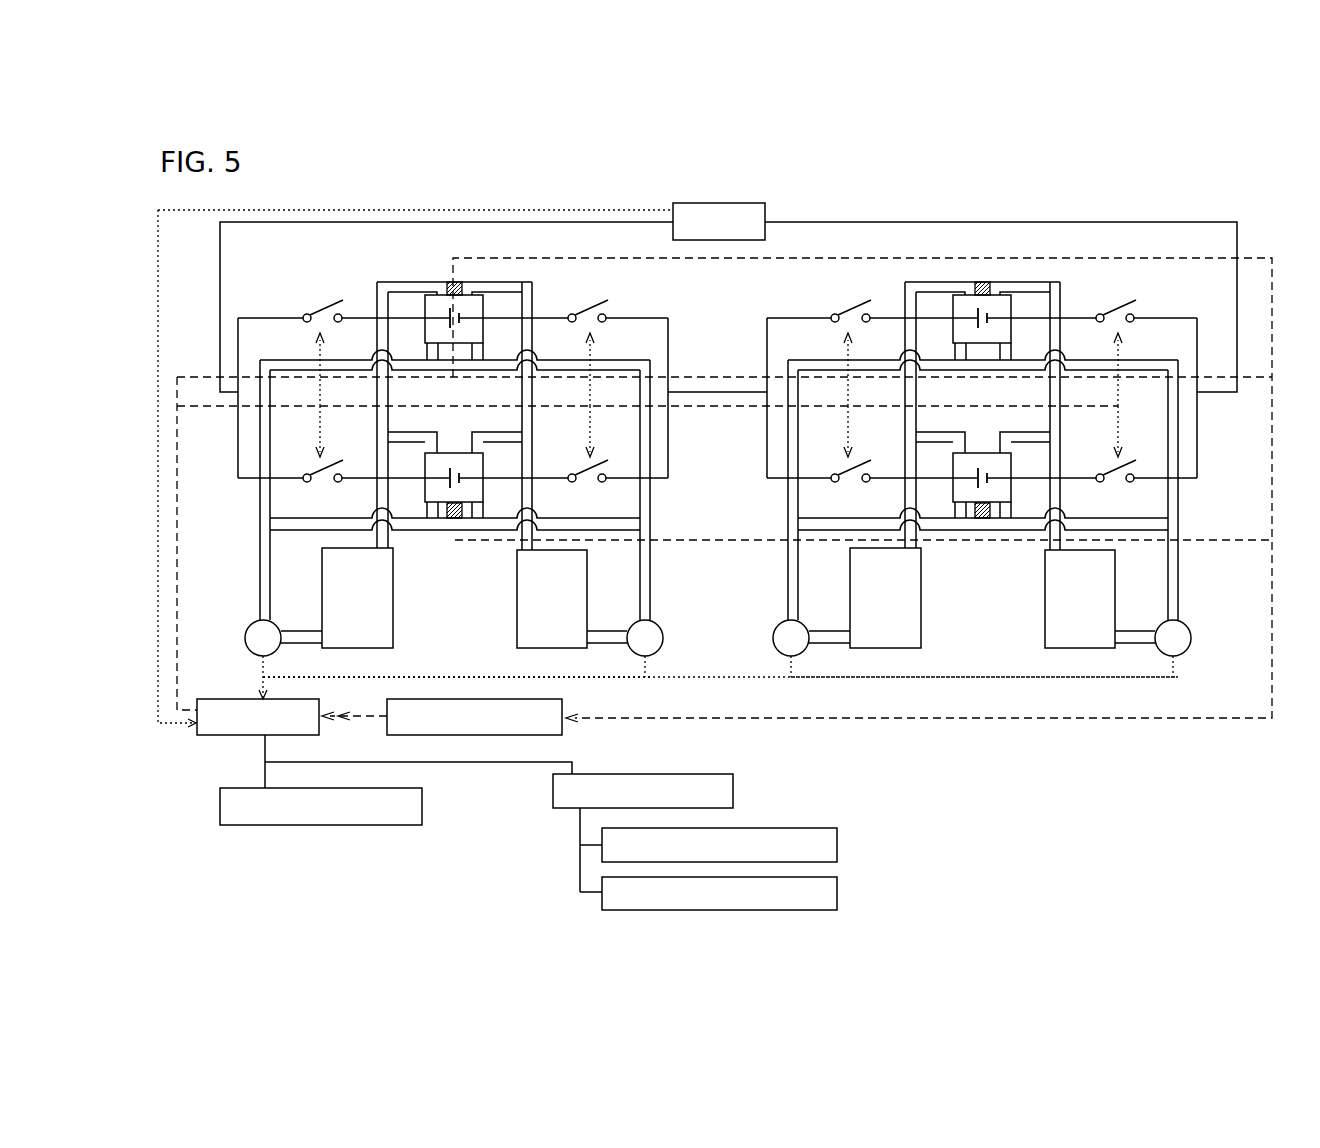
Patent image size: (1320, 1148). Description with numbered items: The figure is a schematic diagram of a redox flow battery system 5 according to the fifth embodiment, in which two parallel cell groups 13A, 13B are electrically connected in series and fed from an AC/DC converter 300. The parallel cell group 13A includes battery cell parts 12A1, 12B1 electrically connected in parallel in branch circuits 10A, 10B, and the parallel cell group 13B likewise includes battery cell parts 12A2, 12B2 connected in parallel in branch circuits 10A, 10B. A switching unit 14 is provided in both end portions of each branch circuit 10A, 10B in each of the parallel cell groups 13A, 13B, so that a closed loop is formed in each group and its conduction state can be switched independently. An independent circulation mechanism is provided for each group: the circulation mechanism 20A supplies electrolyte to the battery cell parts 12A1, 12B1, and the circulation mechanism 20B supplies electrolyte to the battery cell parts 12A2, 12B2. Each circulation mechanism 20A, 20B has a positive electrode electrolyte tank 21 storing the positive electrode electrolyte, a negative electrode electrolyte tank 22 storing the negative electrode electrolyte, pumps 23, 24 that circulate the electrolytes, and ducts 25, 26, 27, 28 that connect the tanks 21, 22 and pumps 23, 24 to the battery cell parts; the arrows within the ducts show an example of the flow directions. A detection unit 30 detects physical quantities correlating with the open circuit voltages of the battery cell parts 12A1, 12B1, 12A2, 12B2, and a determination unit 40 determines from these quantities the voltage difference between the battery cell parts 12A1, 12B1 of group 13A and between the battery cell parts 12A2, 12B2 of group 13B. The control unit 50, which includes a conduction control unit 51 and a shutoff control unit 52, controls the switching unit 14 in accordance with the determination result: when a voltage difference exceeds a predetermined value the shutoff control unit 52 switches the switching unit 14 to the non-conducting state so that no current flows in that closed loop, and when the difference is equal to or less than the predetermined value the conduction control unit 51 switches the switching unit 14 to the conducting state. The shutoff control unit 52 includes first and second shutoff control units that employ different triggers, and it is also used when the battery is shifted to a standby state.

The redox flow battery system 5 is at (1207, 734).
The AC/DC converter 300 is at (765, 213).
The branch circuit 10A is at (650, 318).
The branch circuit 10B is at (658, 480).
The switching unit 14 is at (322, 306).
The battery cell part 12A1 is at (453, 343).
The battery cell part 12B1 is at (457, 453).
The battery cell part 12A2 is at (981, 343).
The battery cell part 12B2 is at (985, 453).
The parallel cell group 13A is at (787, 569).
The parallel cell group 13B is at (1051, 583).
The circulation mechanism 20A is at (431, 592).
The circulation mechanism 20B is at (966, 610).
The positive electrode electrolyte tank 21 is at (394, 607).
The negative electrode electrolyte tank 22 is at (517, 603).
The pump 23 is at (251, 626).
The pump 24 is at (659, 627).
The duct 25 is at (260, 568).
The duct 26 is at (652, 560).
The duct 27 is at (377, 541).
The duct 28 is at (522, 545).
The detection unit 30 is at (451, 282).
The determination unit 40 is at (568, 700).
The control unit 50 is at (206, 736).
The conduction control unit 51 is at (422, 807).
The shutoff control unit 52 is at (733, 791).